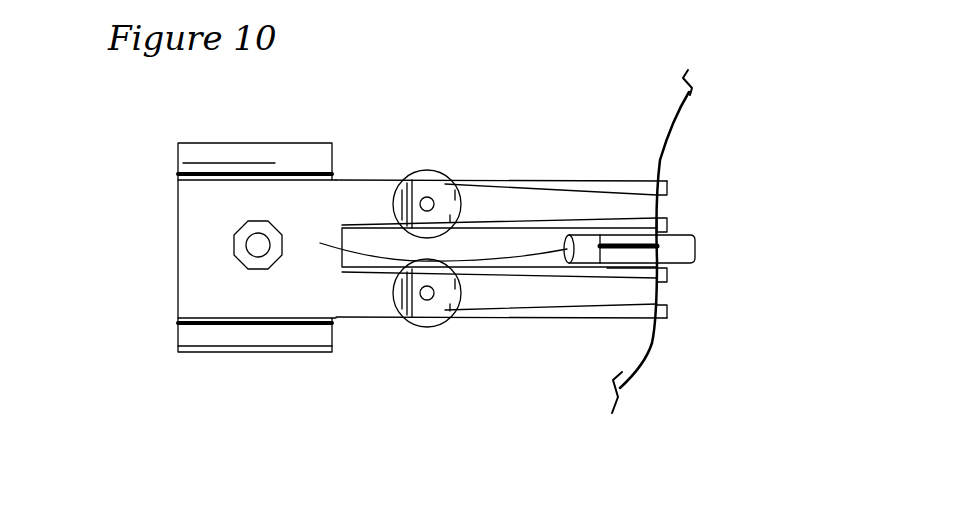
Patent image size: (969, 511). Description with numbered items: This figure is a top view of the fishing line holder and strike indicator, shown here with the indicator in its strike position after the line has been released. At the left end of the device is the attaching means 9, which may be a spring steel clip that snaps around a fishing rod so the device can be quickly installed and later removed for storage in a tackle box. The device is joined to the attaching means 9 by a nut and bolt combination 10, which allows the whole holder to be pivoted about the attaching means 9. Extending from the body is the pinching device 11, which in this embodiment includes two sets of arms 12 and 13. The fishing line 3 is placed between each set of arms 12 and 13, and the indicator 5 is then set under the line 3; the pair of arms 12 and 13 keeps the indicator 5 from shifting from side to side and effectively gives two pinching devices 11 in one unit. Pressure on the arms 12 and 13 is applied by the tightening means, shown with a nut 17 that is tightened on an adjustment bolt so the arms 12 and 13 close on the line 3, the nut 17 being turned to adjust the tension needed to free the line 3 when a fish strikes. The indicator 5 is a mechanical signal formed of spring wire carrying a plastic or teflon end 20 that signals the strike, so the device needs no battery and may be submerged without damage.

The line 3 is at (657, 140).
The indicator 5 is at (387, 262).
The attaching means 9 is at (283, 150).
The nut and bolt combination 10 is at (232, 243).
The pinching device 11 is at (183, 292).
The arms 12 is at (667, 207).
The arms 13 is at (665, 225).
The nut 17 is at (428, 185).
The plastic or teflon end 20 is at (678, 254).